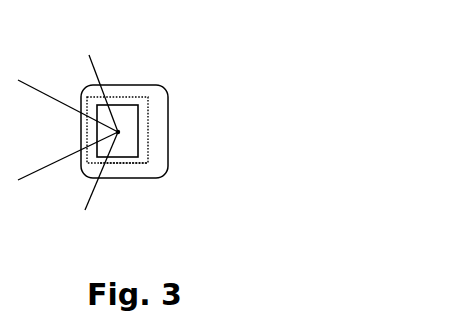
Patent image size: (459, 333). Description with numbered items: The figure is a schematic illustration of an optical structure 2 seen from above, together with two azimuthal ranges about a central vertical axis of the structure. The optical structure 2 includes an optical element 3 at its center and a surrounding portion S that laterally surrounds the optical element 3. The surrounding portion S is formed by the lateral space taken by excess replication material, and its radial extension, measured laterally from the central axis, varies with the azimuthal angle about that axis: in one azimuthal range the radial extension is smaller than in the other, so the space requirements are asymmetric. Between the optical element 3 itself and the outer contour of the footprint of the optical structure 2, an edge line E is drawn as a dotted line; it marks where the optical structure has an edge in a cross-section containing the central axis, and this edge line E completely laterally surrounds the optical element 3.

The optical structure 2 is at (172, 98).
The optical element 3 is at (130, 105).
The surrounding portion S is at (160, 157).
The edge line E is at (133, 165).